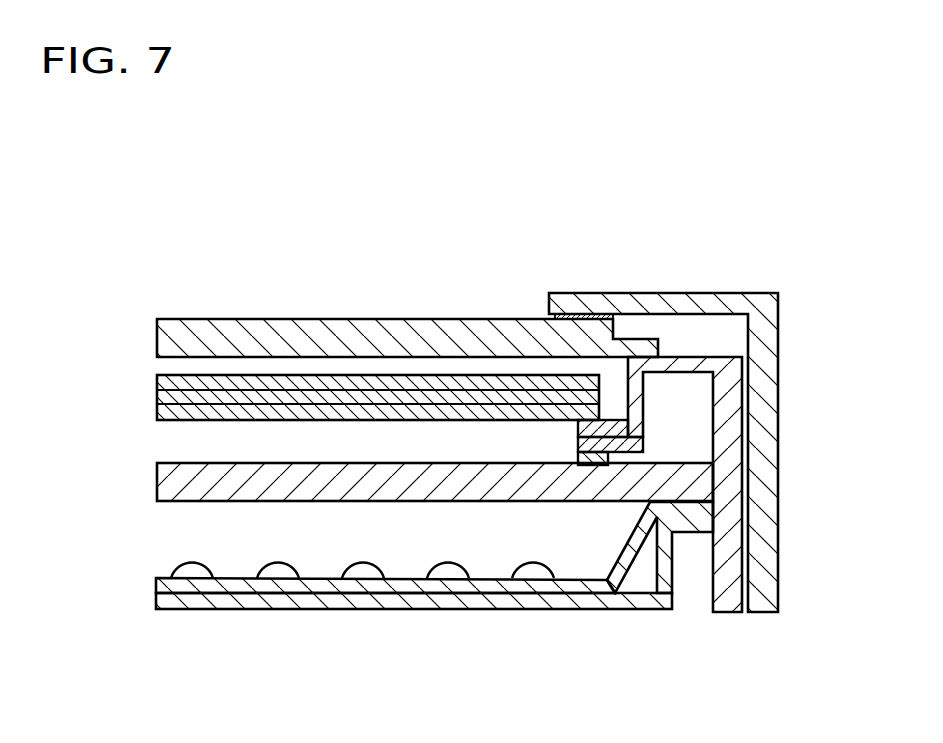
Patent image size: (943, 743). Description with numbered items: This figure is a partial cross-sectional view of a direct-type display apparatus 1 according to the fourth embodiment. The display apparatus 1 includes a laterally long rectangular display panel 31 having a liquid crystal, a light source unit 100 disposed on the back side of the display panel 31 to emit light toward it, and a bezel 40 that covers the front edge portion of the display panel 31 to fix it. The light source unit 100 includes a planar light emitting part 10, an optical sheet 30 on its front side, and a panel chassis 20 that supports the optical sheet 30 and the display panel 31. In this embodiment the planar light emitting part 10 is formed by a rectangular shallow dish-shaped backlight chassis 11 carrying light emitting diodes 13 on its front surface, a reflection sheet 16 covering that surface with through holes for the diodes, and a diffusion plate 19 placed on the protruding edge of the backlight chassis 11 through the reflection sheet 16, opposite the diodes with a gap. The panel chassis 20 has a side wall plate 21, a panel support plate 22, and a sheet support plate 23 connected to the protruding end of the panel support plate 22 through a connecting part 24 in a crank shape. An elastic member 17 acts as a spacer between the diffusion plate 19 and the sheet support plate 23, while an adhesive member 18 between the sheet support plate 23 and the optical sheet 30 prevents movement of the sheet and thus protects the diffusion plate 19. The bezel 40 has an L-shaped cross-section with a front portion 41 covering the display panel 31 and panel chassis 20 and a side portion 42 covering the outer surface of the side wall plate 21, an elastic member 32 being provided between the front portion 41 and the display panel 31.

The display apparatus 1 is at (710, 204).
The planar light emitting part 10 is at (143, 567).
The backlight chassis 11 is at (305, 600).
The light emitting diode 13 is at (568, 564).
The reflection sheet 16 is at (235, 588).
The elastic member 17 is at (594, 460).
The adhesive member 18 is at (614, 428).
The diffusion plate 19 is at (182, 495).
The panel chassis 20 is at (731, 613).
The side wall plate 21 is at (727, 549).
The panel support plate 22 is at (683, 362).
The sheet support plate 23 is at (625, 440).
The connecting part 24 is at (648, 397).
The optical sheet 30 is at (150, 368).
The display panel 31 is at (265, 328).
The elastic member 32 is at (556, 316).
The bezel 40 is at (783, 320).
The front portion 41 is at (657, 302).
The side portion 42 is at (773, 385).
The light source unit 100 is at (141, 437).